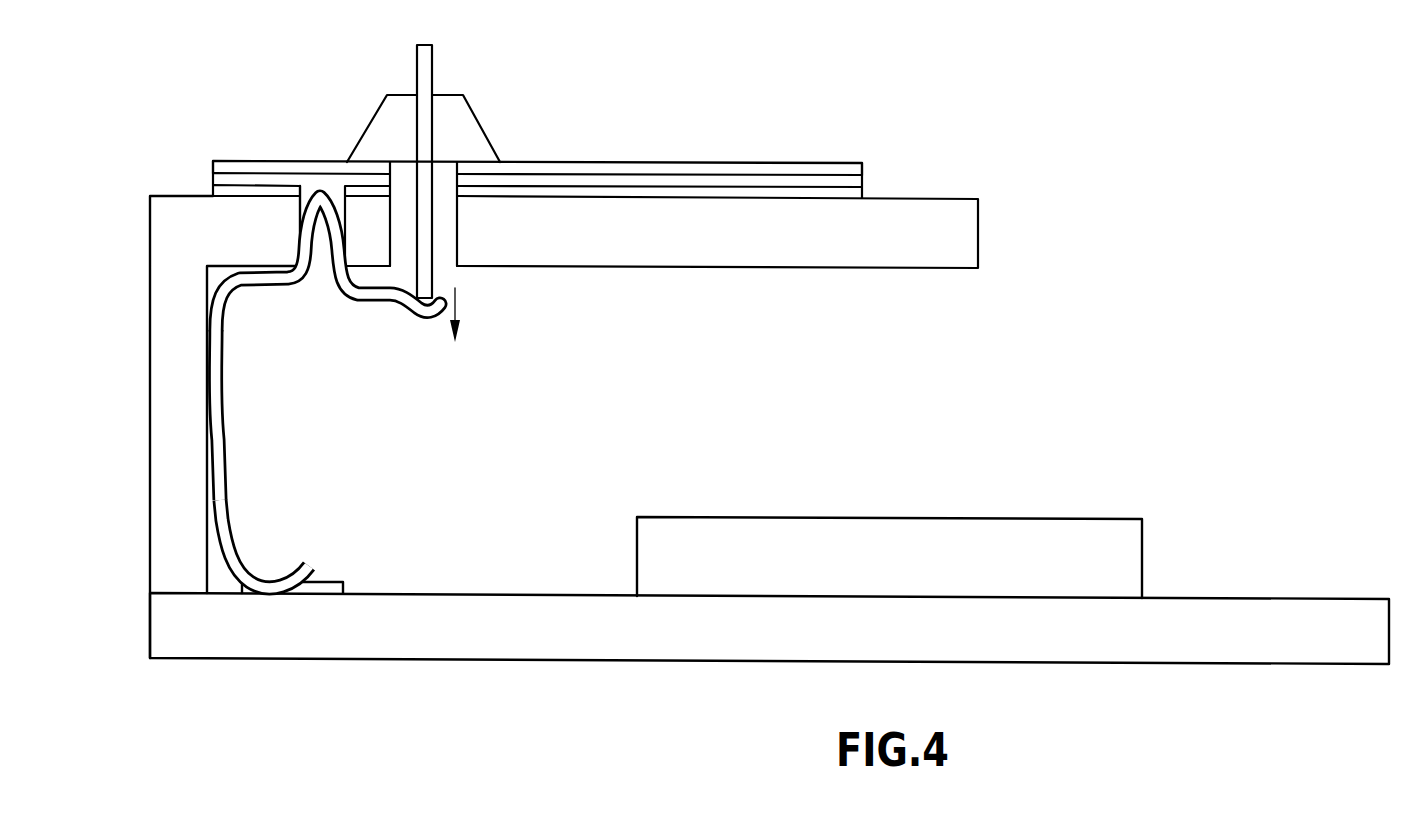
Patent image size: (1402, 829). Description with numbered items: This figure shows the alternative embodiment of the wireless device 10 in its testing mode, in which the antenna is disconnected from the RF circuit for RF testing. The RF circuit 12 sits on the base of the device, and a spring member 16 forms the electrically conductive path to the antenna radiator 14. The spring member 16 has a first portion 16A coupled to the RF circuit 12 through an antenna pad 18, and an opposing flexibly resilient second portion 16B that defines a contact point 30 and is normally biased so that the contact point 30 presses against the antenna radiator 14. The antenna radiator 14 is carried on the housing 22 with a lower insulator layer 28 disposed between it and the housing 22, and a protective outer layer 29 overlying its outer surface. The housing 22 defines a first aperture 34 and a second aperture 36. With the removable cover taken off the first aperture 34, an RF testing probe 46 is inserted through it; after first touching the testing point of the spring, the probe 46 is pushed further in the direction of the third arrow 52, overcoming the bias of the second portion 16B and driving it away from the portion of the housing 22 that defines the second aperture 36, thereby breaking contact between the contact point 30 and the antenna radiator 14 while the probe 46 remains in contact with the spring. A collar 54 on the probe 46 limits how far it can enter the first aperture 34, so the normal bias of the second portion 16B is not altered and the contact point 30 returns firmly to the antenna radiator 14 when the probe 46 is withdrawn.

The wireless device 10 is at (138, 489).
The RF circuit 12 is at (872, 518).
The antenna radiator 14 is at (862, 180).
The spring member 16 is at (227, 432).
The first portion 16A is at (290, 560).
The second portion 16B is at (420, 328).
The antenna pad 18 is at (343, 582).
The housing 22 is at (158, 283).
The lower insulator layer 28 is at (862, 193).
The protective outer layer 29 is at (862, 168).
The contact point 30 is at (313, 192).
The first aperture 34 is at (447, 208).
The second aperture 36 is at (343, 203).
The RF testing probe 46 is at (432, 54).
The third arrow 52 is at (458, 296).
The collar 54 is at (463, 97).